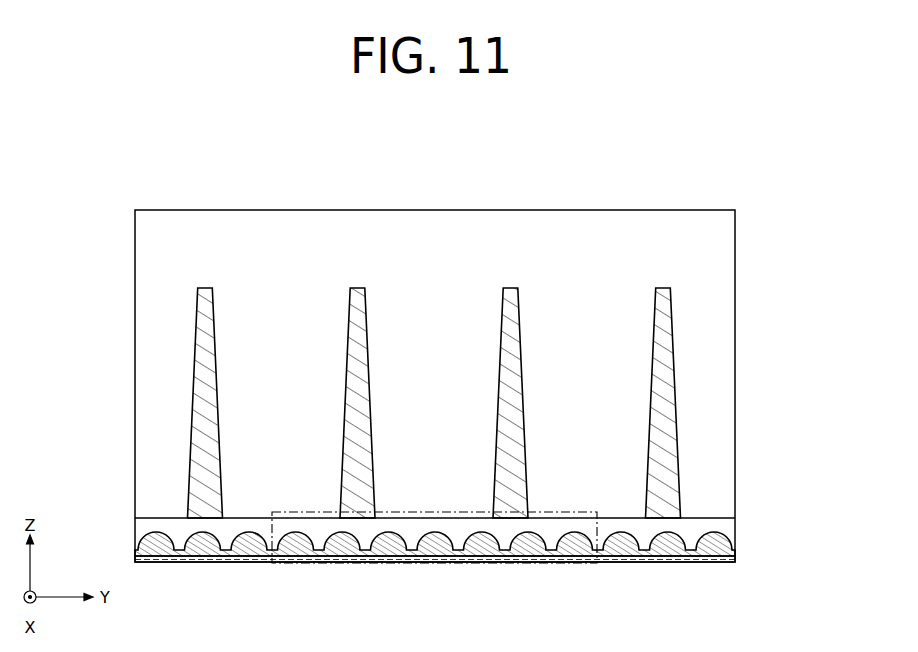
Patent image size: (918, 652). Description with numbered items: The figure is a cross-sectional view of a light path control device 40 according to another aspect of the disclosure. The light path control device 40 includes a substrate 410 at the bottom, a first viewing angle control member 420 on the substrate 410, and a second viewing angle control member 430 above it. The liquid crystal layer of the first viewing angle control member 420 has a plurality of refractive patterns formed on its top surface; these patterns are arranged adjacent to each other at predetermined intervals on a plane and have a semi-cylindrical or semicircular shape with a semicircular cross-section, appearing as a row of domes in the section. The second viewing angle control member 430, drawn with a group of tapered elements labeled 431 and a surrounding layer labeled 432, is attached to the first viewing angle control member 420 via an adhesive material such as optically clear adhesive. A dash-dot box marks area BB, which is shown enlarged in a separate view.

The light path control device 40 is at (788, 164).
The substrate 410 is at (735, 557).
The first viewing angle control member 420 is at (728, 535).
The second viewing angle control member 430 is at (800, 258).
The partition wall 431 is at (665, 345).
The filling / encapsulation layer 432 is at (712, 256).
The area BB is at (567, 563).